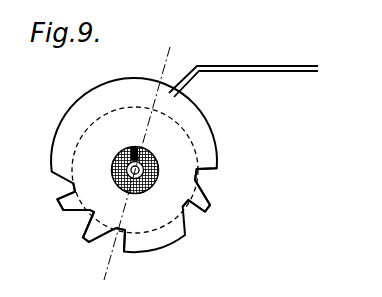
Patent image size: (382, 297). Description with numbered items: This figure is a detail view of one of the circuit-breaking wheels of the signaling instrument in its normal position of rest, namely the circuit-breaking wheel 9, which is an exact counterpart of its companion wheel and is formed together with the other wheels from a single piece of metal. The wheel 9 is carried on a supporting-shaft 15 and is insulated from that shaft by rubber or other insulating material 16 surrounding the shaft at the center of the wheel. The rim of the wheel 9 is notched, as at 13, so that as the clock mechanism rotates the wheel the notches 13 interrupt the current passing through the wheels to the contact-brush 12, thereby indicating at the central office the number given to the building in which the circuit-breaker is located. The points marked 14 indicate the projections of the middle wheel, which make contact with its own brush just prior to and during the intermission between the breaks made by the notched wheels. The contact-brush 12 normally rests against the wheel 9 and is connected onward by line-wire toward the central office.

The circuit-breaking wheel 9 is at (134, 163).
The contact-brush 12 is at (243, 72).
The notches 13 is at (57, 190).
The projections 14 is at (61, 207).
The supporting-shaft 15 is at (135, 148).
The insulating material 16 is at (150, 189).